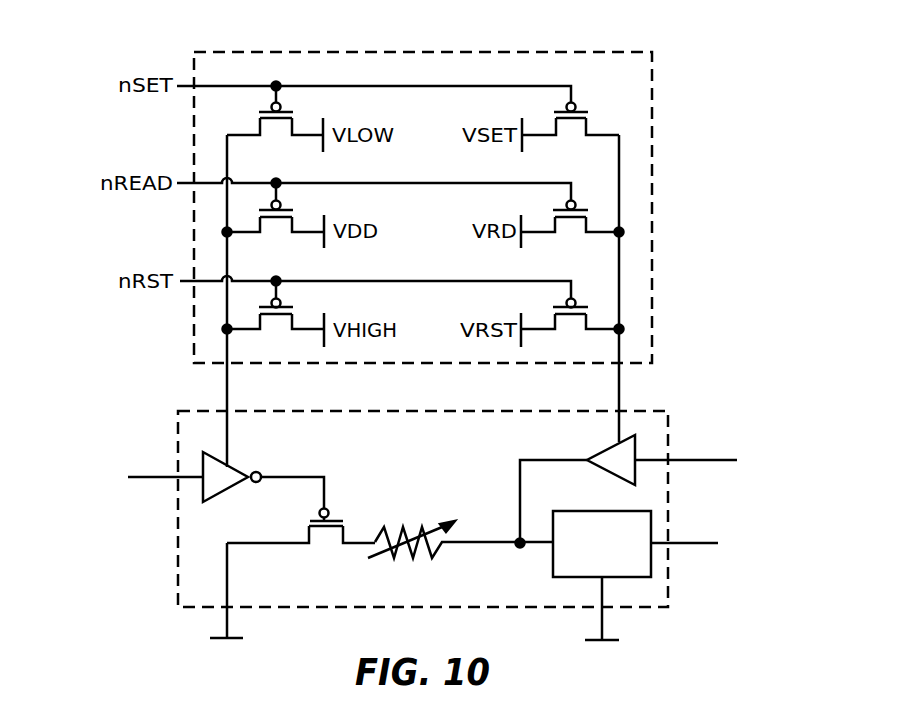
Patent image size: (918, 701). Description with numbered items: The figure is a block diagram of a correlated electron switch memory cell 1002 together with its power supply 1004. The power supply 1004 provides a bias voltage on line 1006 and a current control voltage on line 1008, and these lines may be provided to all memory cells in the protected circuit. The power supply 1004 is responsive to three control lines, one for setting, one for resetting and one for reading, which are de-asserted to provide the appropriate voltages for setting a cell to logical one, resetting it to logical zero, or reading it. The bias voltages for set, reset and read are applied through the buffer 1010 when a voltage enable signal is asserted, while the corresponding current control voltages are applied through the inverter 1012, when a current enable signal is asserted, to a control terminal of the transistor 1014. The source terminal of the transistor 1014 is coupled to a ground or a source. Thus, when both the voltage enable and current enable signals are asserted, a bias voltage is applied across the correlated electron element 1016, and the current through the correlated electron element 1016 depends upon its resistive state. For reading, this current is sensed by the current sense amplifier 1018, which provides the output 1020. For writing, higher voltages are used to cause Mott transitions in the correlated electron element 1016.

The CES memory cell 1002 is at (380, 607).
The power supply 1004 is at (320, 52).
The line 1006 is at (621, 384).
The line 1008 is at (225, 394).
The buffer 1010 is at (599, 450).
The inverter 1012 is at (239, 467).
The transistor 1014 is at (300, 544).
The correlated electron element 1016 is at (413, 524).
The current sense amplifier 1018 is at (640, 577).
The output 1020 is at (683, 544).